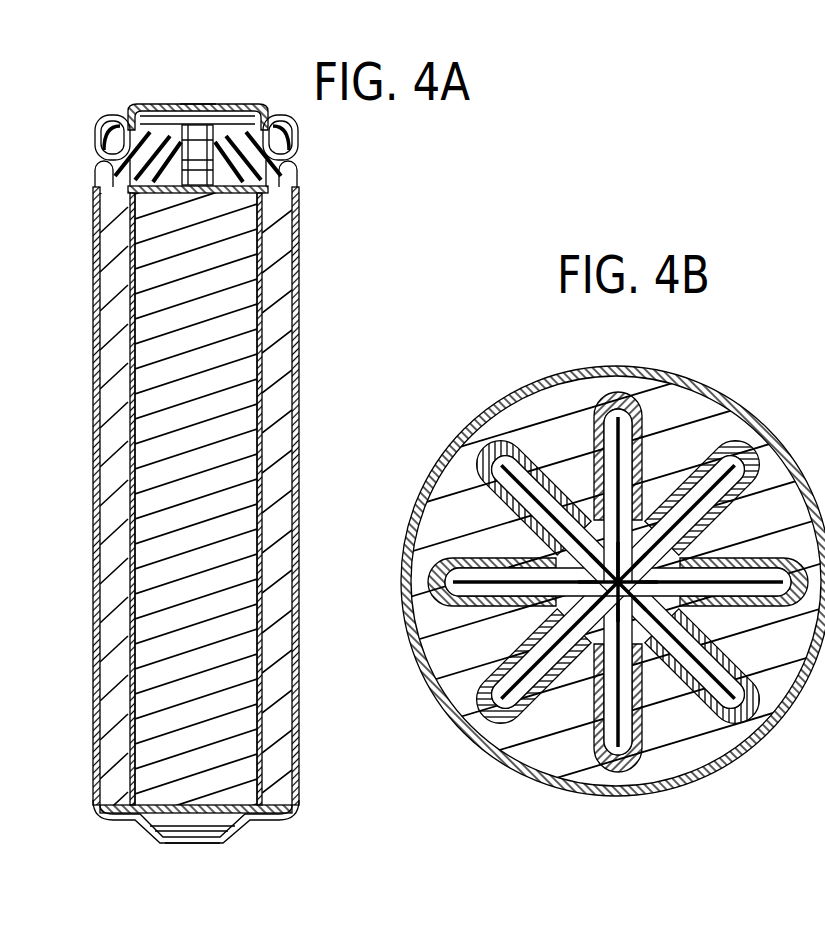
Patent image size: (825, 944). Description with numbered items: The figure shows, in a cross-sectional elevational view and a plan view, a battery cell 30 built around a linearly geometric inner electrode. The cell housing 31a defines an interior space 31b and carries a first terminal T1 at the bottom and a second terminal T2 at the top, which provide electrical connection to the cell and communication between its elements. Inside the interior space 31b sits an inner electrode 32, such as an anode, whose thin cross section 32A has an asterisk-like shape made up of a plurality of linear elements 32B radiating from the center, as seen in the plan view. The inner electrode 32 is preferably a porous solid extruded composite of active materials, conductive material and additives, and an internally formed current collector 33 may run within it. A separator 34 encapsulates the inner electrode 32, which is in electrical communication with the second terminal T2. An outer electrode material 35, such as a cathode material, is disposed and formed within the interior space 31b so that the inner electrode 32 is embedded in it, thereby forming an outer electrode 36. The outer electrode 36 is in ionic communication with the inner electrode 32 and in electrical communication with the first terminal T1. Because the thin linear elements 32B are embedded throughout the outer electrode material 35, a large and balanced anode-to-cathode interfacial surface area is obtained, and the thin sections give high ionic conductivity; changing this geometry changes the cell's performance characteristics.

In FIG. 4A, the battery cell 30 is at (73, 195).
In FIG. 4A, the cell housing 31a is at (95, 273).
In FIG. 4B, the cell housing 31a is at (790, 713).
In FIG. 4A, the interior space 31b is at (250, 176).
In FIG. 4A, the inner electrode 32 is at (150, 245).
In FIG. 4B, the inner electrode 32 is at (500, 477).
In FIG. 4B, the thin cross section 32A is at (543, 457).
In FIG. 4B, the linear elements 32B is at (632, 435).
In FIG. 4B, the internally formed current collector 33 is at (497, 450).
In FIG. 4A, the separator 34 is at (125, 433).
In FIG. 4B, the separator 34 is at (455, 600).
In FIG. 4A, the outer electrode material 35 is at (110, 550).
In FIG. 4B, the outer electrode material 35 is at (535, 745).
In FIG. 4A, the outer electrode 36 is at (113, 596).
In FIG. 4B, the outer electrode 36 is at (697, 750).
In FIG. 4A, the first terminal T1 is at (181, 844).
In FIG. 4A, the second terminal T2 is at (210, 103).